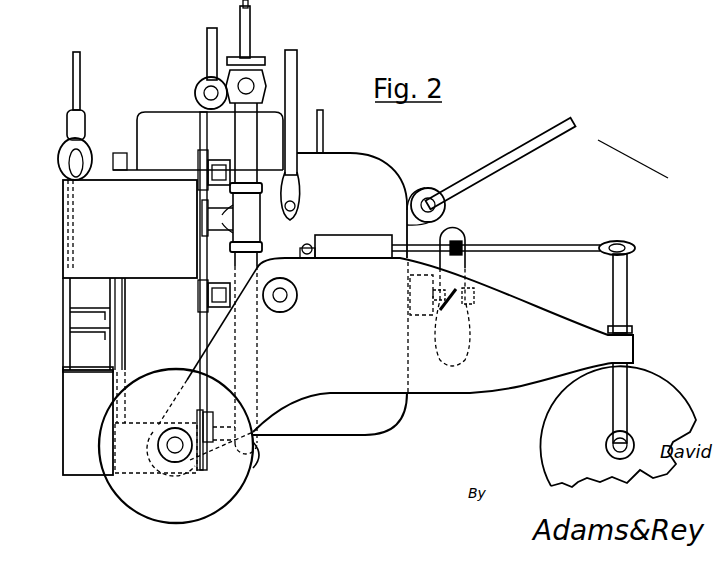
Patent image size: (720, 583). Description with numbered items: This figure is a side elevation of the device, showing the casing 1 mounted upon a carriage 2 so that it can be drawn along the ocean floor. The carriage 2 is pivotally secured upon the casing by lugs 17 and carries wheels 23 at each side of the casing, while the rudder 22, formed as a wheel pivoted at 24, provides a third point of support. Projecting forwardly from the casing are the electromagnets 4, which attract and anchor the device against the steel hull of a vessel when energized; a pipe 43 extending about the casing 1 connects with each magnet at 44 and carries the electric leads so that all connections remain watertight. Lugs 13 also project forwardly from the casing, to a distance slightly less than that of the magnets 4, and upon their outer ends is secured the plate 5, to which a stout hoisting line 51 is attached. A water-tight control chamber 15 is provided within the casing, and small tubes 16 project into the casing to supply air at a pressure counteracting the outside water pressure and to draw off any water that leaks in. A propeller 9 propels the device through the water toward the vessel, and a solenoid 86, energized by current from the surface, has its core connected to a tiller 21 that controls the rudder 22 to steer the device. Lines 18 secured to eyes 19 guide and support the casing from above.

The casing 1 is at (381, 167).
The carriage 2 is at (410, 331).
The electromagnet 4 is at (130, 327).
The plate 5 is at (63, 320).
The propeller 9 is at (462, 246).
The lug 13 is at (97, 343).
The control chamber 15 is at (163, 118).
The tube 16 is at (323, 136).
The lug 17 is at (297, 293).
The line 18 is at (207, 38).
The eye 19 is at (197, 86).
The tiller 21 is at (633, 250).
The rudder 22 is at (687, 368).
The wheel 23 is at (160, 372).
The pivot 24 is at (612, 443).
The pipe 43 is at (235, 138).
The magnet connection 44 is at (200, 230).
The hoisting line 51 is at (77, 92).
The solenoid 86 is at (366, 238).